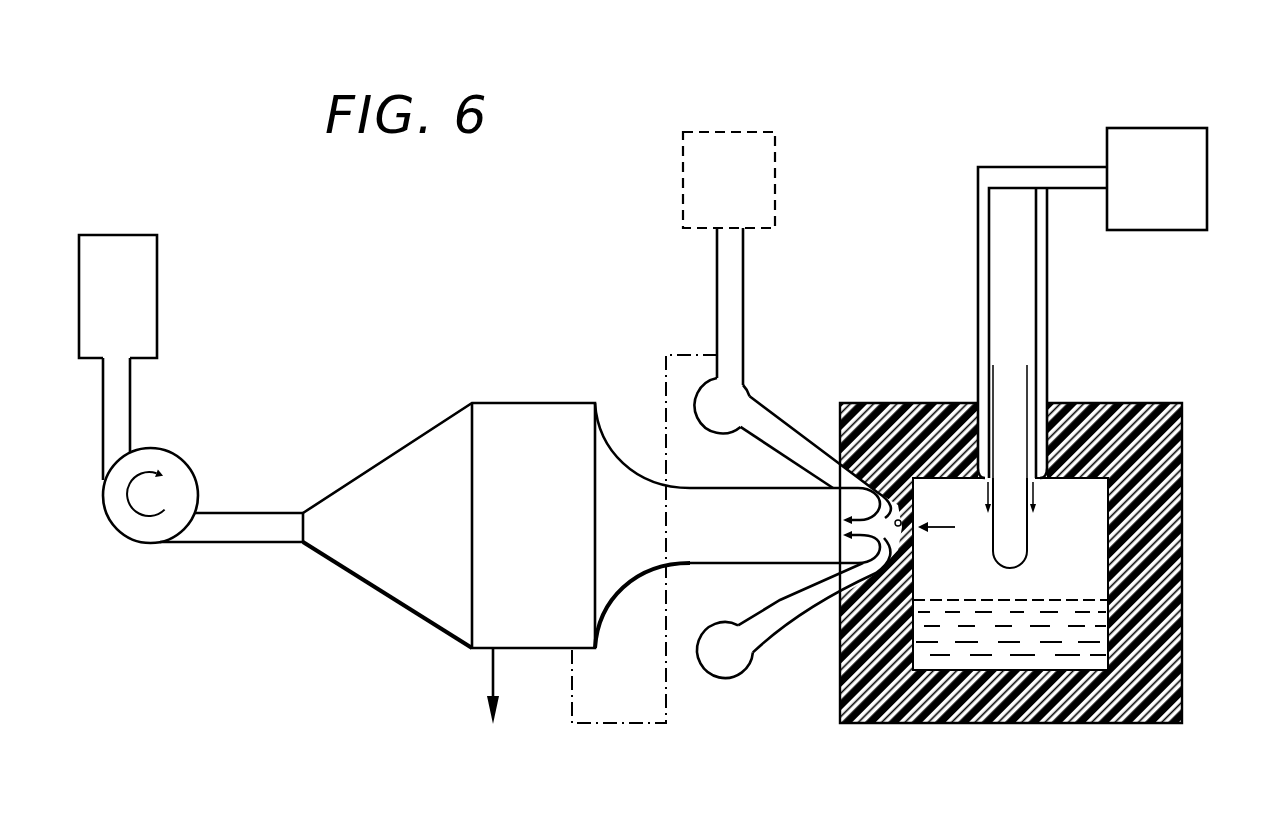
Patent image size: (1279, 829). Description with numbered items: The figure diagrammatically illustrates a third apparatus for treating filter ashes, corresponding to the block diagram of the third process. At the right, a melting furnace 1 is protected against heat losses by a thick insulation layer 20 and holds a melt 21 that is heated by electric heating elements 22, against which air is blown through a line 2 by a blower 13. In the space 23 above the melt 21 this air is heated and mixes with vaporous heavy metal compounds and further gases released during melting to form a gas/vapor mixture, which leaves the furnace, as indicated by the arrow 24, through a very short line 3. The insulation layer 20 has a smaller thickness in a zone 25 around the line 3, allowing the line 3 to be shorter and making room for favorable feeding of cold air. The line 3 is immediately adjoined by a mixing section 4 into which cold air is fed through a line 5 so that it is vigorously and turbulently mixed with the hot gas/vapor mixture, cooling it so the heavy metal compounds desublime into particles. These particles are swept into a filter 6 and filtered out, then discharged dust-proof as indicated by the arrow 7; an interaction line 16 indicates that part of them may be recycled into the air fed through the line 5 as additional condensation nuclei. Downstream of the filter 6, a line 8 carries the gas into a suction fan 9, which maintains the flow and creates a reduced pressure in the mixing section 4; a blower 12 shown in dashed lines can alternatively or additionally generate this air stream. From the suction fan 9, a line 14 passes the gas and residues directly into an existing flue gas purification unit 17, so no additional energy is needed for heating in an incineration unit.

The melting furnace 1 is at (1183, 460).
The line 2 is at (988, 280).
The discharge conduit 3 is at (898, 478).
The mixing section 4 is at (772, 540).
The distribution conduit 5 is at (744, 300).
The filter 6 is at (533, 414).
The arrow 7 is at (490, 674).
The line 8 is at (255, 543).
The suction fan 9 is at (172, 466).
The blower 12 is at (777, 175).
The blower 13 is at (1157, 179).
The line 14 is at (130, 392).
The interaction line 16 is at (603, 723).
The flue gas purification unit 17 is at (157, 300).
The insulation layer 20 is at (1150, 641).
The melt 21 is at (1005, 663).
The electric heating elements 22 is at (1027, 537).
The space 23 is at (1093, 575).
The arrow 24 is at (942, 527).
The zone 25 is at (838, 668).